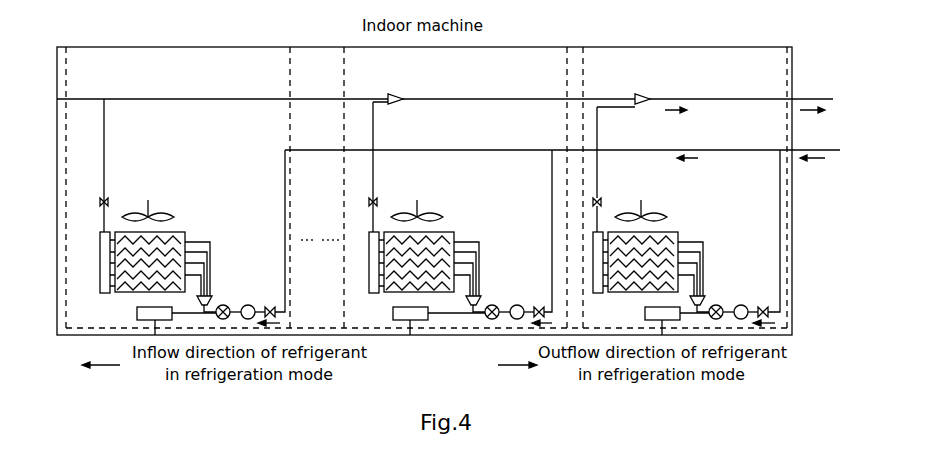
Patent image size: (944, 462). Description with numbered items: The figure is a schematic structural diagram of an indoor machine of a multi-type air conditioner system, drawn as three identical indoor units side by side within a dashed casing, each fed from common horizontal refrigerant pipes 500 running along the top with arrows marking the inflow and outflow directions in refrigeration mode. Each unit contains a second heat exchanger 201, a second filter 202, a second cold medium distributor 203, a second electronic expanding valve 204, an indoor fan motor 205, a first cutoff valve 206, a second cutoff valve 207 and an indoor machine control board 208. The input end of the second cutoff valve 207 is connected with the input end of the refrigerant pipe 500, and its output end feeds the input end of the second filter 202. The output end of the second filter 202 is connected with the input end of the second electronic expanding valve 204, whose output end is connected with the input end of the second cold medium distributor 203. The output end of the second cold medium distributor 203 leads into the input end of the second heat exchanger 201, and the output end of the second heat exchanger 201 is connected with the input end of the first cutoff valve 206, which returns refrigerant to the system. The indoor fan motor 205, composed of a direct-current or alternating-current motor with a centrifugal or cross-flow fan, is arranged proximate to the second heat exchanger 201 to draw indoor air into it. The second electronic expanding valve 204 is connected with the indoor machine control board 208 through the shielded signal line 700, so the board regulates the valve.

The second heat exchanger 201 is at (711, 218).
The second filter 202 is at (741, 305).
The second cold medium distributor 203 is at (700, 304).
The second electronic expanding valve 204 is at (714, 305).
The indoor fan motor 205 is at (646, 216).
The first cutoff valve 206 is at (599, 203).
The second cutoff valve 207 is at (766, 308).
The indoor machine control board 208 is at (645, 311).
The refrigerant pipe 500 is at (448, 121).
The shielded signal line 700 is at (442, 191).